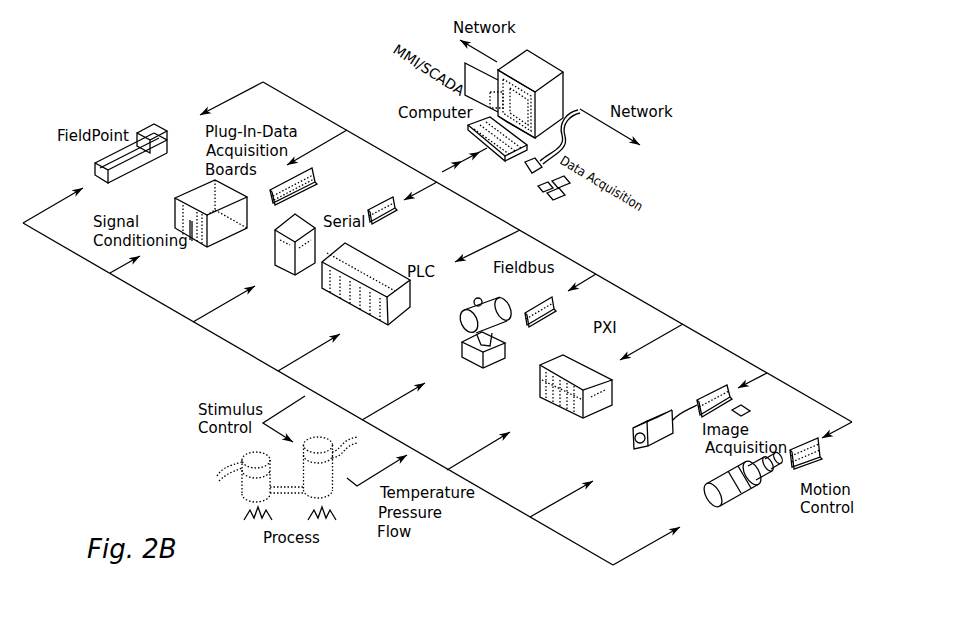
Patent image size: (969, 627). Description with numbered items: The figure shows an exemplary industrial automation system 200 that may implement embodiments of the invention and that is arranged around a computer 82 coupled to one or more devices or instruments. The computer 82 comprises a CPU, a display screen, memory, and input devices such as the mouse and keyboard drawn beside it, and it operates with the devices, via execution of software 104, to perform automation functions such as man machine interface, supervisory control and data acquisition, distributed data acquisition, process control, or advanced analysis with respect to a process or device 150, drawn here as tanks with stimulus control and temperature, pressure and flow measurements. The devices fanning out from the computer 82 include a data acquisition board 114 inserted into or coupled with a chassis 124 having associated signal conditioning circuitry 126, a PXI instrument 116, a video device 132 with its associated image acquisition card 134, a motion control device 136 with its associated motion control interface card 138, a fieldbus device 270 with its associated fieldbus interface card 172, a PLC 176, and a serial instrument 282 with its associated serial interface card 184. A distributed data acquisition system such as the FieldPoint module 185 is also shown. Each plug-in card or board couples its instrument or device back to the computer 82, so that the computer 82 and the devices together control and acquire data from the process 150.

The computer 82 is at (538, 65).
The software 104 is at (594, 213).
The data acquisition board 114 is at (313, 167).
The PXI instrument 116 is at (577, 363).
The chassis 124 is at (193, 193).
The signal conditioning circuitry 126 is at (212, 242).
The video device 132 is at (637, 440).
The image acquisition card 134 is at (707, 393).
The motion control device 136 is at (735, 502).
The motion control interface card 138 is at (812, 462).
The process or device 150 is at (227, 472).
The fieldbus interface card 172 is at (537, 300).
The PLC (Programmable Logic Controller) 176 is at (377, 265).
The serial interface card 184 is at (378, 200).
The FieldPoint distributed I/O module 185 is at (140, 125).
The industrial automation system 200 is at (757, 135).
The fieldbus device 270 is at (462, 352).
The serial instrument 282 is at (277, 257).